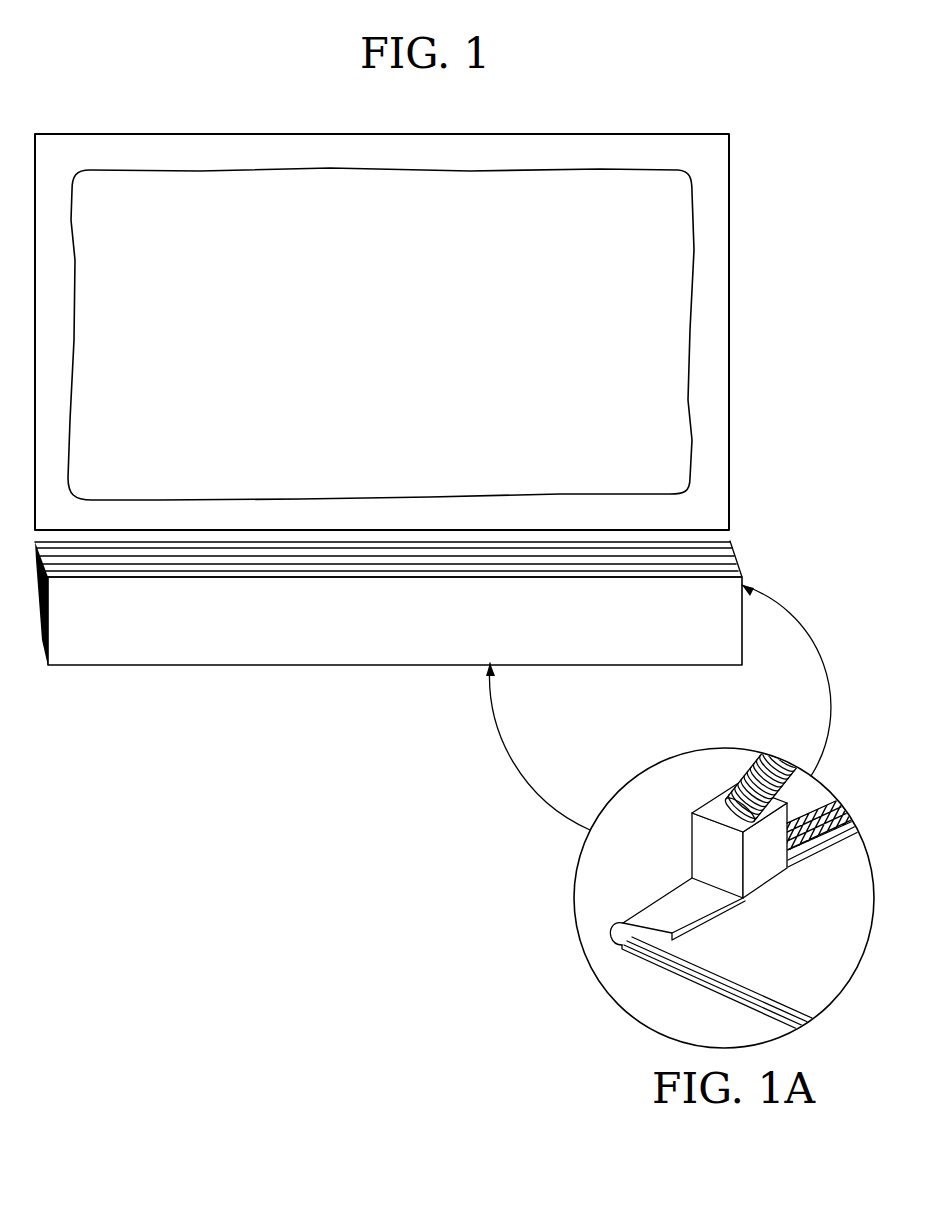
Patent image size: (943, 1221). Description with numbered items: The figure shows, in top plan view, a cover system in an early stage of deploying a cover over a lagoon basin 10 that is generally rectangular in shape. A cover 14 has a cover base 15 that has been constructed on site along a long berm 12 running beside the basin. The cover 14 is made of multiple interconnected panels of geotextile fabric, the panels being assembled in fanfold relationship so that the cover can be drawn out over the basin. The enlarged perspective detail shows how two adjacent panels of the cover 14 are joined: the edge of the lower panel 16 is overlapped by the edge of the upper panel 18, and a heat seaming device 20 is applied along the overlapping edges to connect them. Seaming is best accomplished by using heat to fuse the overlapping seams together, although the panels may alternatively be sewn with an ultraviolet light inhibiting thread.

In FIG. 1, the lagoon basin 10 is at (603, 272).
In FIG. 1, the long berm 12 is at (702, 510).
In FIG. 1, the cover 14 is at (388, 674).
In FIG. 1, the cover base 15 is at (305, 630).
In FIG. 1A, the lower panel 16 is at (677, 967).
In FIG. 1A, the upper panel 18 is at (797, 960).
In FIG. 1A, the heat seaming device 20 is at (715, 848).